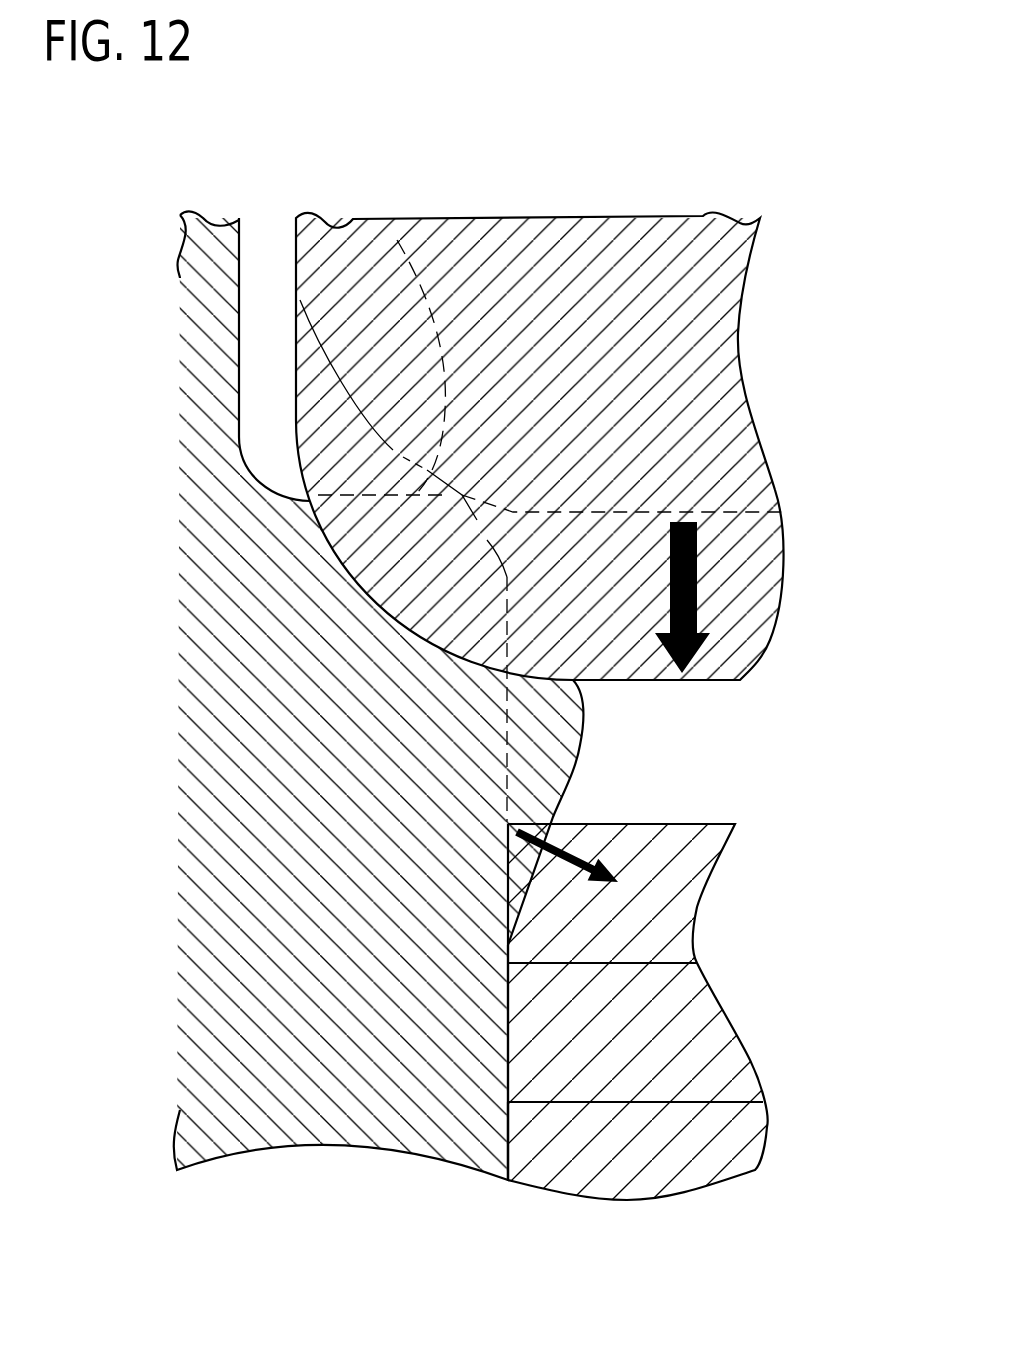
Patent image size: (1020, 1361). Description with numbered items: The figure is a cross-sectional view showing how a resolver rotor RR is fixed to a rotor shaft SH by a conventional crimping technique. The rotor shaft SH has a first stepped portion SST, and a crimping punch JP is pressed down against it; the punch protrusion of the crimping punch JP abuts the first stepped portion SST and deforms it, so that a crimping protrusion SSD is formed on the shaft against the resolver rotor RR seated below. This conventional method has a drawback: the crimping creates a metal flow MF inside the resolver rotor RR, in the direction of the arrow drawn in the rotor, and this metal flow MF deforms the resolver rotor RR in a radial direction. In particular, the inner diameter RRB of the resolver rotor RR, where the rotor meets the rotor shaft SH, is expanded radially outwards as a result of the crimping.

The rotor shaft SH is at (186, 830).
The crimping punch JP is at (500, 224).
The first stepped portion SST is at (396, 232).
The crimping protrusion SSD is at (583, 713).
The resolver rotor RR is at (683, 833).
The metal flow MF is at (585, 849).
The inner diameter RRB is at (505, 1160).